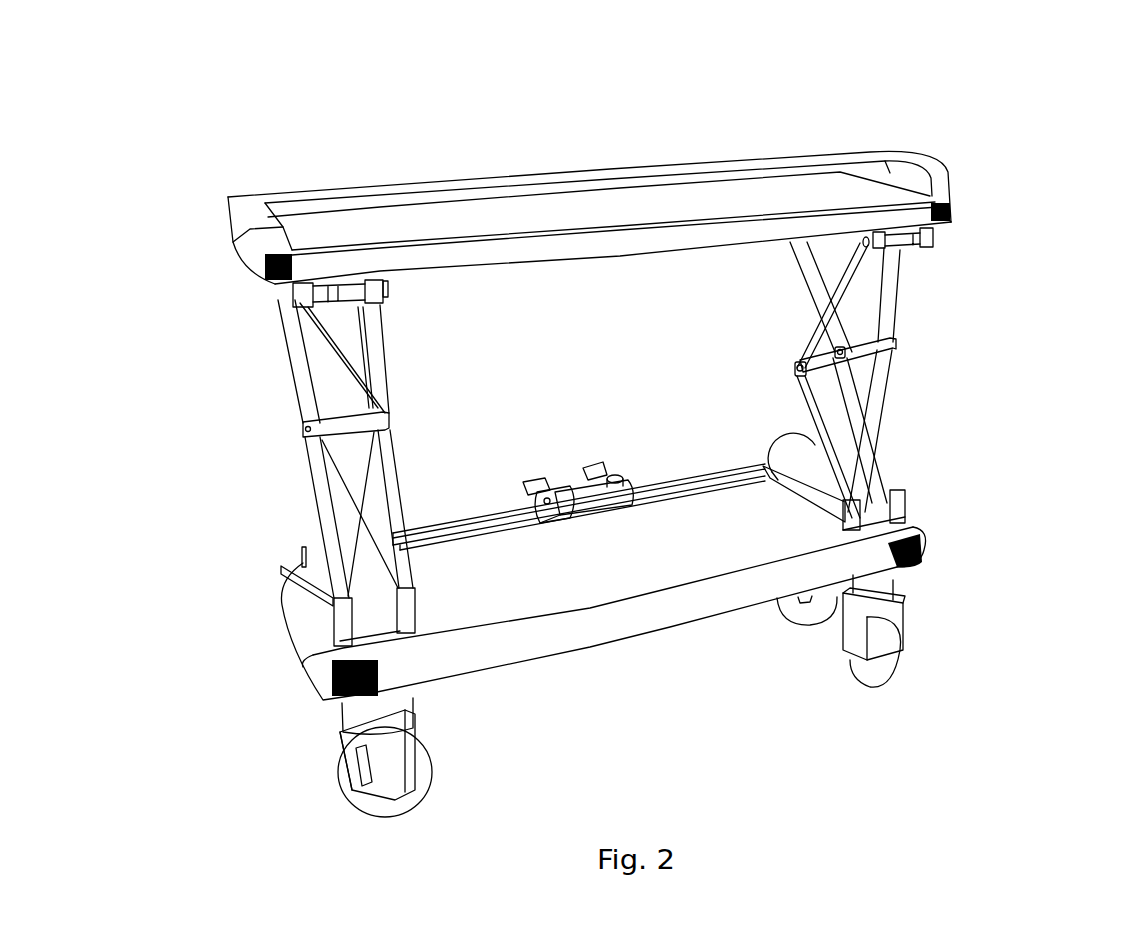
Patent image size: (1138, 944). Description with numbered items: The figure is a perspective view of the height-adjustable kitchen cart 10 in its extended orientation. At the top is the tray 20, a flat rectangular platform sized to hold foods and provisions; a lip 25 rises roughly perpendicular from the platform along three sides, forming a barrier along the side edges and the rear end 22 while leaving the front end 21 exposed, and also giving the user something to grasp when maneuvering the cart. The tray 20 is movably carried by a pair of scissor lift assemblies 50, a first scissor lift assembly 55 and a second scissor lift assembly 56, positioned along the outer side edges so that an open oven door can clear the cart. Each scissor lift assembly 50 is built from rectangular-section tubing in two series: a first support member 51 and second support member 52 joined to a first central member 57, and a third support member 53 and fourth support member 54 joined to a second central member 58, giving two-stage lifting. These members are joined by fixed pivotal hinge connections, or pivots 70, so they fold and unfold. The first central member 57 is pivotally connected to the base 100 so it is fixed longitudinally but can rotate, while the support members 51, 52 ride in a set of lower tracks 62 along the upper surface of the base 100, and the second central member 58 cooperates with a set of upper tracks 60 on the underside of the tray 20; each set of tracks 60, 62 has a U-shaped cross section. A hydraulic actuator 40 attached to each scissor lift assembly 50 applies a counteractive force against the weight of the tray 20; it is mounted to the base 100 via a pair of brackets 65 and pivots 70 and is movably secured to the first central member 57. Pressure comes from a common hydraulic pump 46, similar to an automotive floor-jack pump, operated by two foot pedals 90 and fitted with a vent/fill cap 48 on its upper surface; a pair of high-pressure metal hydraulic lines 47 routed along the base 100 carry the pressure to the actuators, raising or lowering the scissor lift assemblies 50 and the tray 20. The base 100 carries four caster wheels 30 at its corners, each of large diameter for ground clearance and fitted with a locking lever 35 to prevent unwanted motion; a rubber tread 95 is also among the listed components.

The height-adjustable kitchen cart 10 is at (1064, 160).
The tray 20 is at (383, 225).
The front end 21 is at (580, 270).
The rear end 22 is at (517, 162).
The lip 25 is at (575, 172).
The caster wheel 30 is at (417, 773).
The locking lever 35 is at (327, 703).
The hydraulic actuator 40 is at (790, 450).
The hydraulic pump 46 is at (540, 505).
The hydraulic line 47 is at (700, 496).
The vent/fill cap 48 is at (617, 478).
The scissor lift assembly 50 is at (404, 392).
The first support member 51 is at (318, 506).
The second support member 52 is at (389, 430).
The third support member 53 is at (290, 343).
The fourth support member 54 is at (372, 371).
The first scissor lift assembly 55 is at (180, 453).
The second scissor lift assembly 56 is at (1020, 412).
The first central member 57 is at (333, 463).
The second central member 58 is at (323, 355).
The set of upper tracks 60 is at (290, 293).
The set of lower tracks 62 is at (302, 565).
The bracket 65 is at (340, 640).
The pivot 70 is at (300, 290).
The foot pedal 90 is at (597, 477).
The rubber tread 95 is at (585, 492).
The base 100 is at (922, 560).